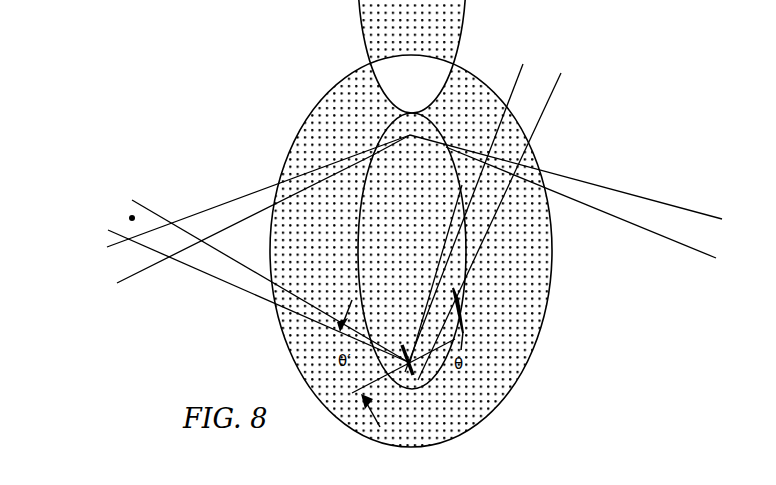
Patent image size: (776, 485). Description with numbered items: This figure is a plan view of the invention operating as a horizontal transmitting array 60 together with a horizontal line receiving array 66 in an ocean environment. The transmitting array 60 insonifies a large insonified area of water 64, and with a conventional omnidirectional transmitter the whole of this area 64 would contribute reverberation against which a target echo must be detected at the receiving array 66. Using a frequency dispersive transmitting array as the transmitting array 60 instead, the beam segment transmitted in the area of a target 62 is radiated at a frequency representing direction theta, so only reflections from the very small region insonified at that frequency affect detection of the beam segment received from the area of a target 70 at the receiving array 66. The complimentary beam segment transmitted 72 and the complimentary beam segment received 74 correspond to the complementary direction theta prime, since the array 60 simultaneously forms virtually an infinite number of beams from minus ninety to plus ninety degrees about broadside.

The horizontal transmitting array 60 is at (404, 386).
The beam segment transmitted in the area of a target 62 is at (533, 88).
The insonified area of water 64 is at (513, 344).
The horizontal line receiving array 66 is at (418, 122).
The beam segment received from the area of a target 70 is at (703, 232).
The complimentary beam segment transmitted 72 is at (148, 210).
The complimentary beam segment received 74 is at (130, 258).